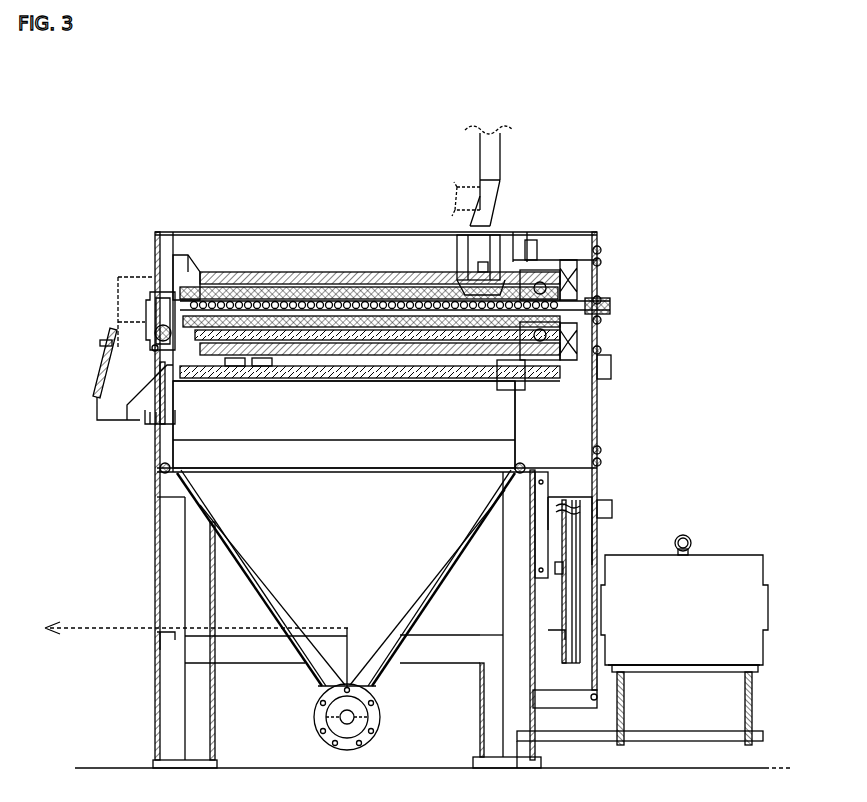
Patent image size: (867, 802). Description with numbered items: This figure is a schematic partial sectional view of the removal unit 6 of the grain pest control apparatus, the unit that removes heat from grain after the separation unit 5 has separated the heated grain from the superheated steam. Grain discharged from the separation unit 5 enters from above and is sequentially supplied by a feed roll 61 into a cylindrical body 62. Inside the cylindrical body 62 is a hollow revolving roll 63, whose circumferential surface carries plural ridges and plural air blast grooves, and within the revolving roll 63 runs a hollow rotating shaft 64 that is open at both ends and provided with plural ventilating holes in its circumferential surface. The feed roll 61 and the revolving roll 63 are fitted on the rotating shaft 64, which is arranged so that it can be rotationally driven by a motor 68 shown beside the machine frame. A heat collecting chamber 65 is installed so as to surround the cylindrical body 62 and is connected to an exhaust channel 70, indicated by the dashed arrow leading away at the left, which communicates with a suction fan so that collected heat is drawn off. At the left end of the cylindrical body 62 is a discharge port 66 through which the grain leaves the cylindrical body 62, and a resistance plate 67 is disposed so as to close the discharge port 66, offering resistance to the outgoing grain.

The separation unit 5 is at (453, 164).
The removal unit 6 is at (141, 176).
The feed roll 61 is at (477, 293).
The cylindrical body 62 is at (357, 236).
The revolving roll 63 is at (290, 275).
The rotating shaft 64 is at (228, 300).
The heat collecting chamber 65 is at (248, 527).
The discharge port 66 is at (137, 317).
The resistance plate 67 is at (160, 358).
The motor 68 is at (705, 580).
The exhaust channel 70 is at (146, 628).